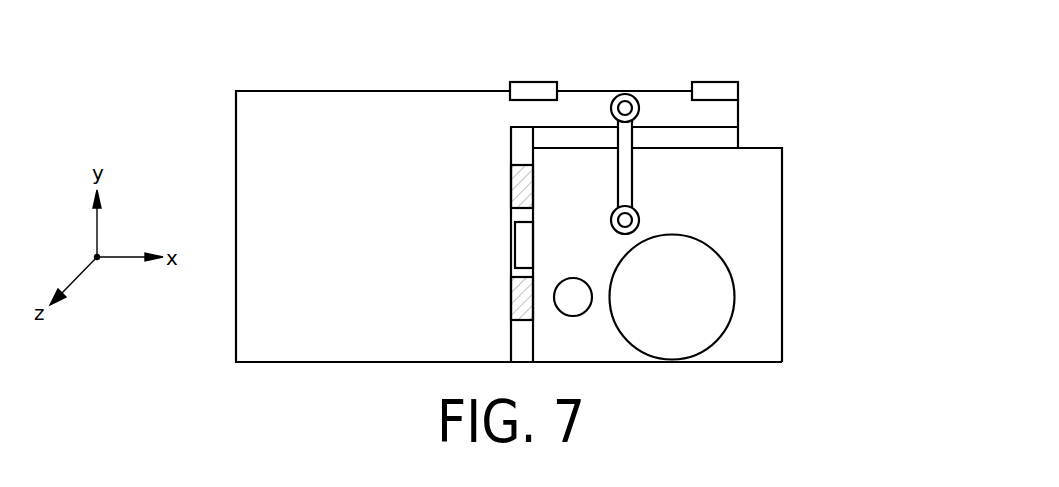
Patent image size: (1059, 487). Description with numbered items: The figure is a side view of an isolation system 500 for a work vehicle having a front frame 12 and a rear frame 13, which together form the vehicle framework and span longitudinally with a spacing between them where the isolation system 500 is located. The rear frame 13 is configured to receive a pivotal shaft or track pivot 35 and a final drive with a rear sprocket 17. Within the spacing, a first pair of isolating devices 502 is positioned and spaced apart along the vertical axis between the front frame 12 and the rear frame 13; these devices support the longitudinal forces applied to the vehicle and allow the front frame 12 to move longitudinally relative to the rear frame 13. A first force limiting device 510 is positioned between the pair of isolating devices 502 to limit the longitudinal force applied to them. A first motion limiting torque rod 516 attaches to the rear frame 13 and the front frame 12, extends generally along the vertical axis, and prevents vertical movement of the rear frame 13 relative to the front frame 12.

The isolation system 500 is at (781, 87).
The front frame 12 is at (252, 183).
The rear frame 13 is at (766, 342).
The rear sprocket 17 is at (668, 340).
The track pivot 35 is at (574, 298).
The first pair of isolating devices 502 is at (518, 188).
The first force limiting device 510 is at (518, 245).
The first motion limiting torque rod 516 is at (623, 165).